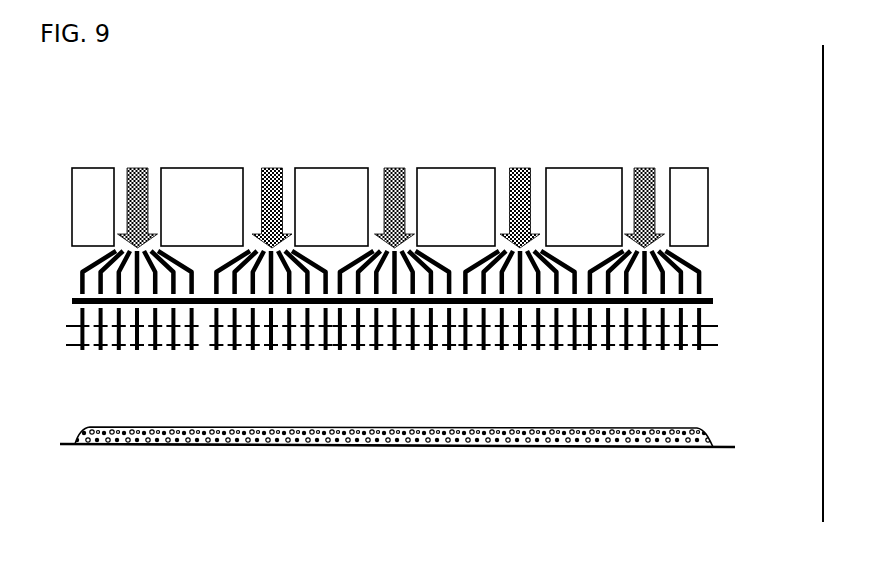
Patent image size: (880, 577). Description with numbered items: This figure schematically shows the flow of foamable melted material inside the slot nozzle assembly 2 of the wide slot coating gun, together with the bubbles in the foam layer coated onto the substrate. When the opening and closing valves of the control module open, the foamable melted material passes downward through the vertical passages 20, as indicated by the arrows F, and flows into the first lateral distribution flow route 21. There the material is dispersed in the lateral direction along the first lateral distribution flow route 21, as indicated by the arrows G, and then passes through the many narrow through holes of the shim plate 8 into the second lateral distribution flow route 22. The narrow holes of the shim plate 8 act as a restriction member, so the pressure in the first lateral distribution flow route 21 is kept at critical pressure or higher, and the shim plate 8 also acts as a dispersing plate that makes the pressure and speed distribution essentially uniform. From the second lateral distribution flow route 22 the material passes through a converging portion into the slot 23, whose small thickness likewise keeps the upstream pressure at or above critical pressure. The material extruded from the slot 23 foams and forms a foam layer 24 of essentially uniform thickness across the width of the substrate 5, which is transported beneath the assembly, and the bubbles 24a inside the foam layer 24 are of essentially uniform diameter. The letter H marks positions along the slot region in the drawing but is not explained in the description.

The slot nozzle assembly 2 is at (717, 148).
The vertical passages 20 is at (113, 168).
The arrows F is at (142, 168).
The arrows G is at (93, 258).
The first lateral distribution flow route 21 is at (719, 255).
The shim plate 8 is at (713, 303).
The second lateral distribution flow route 22 is at (716, 308).
The slot 23 is at (716, 330).
The nozzle hole H is at (131, 350).
The foam layer 24 is at (715, 424).
The bubbles 24a is at (561, 434).
The substrate 5 is at (722, 448).